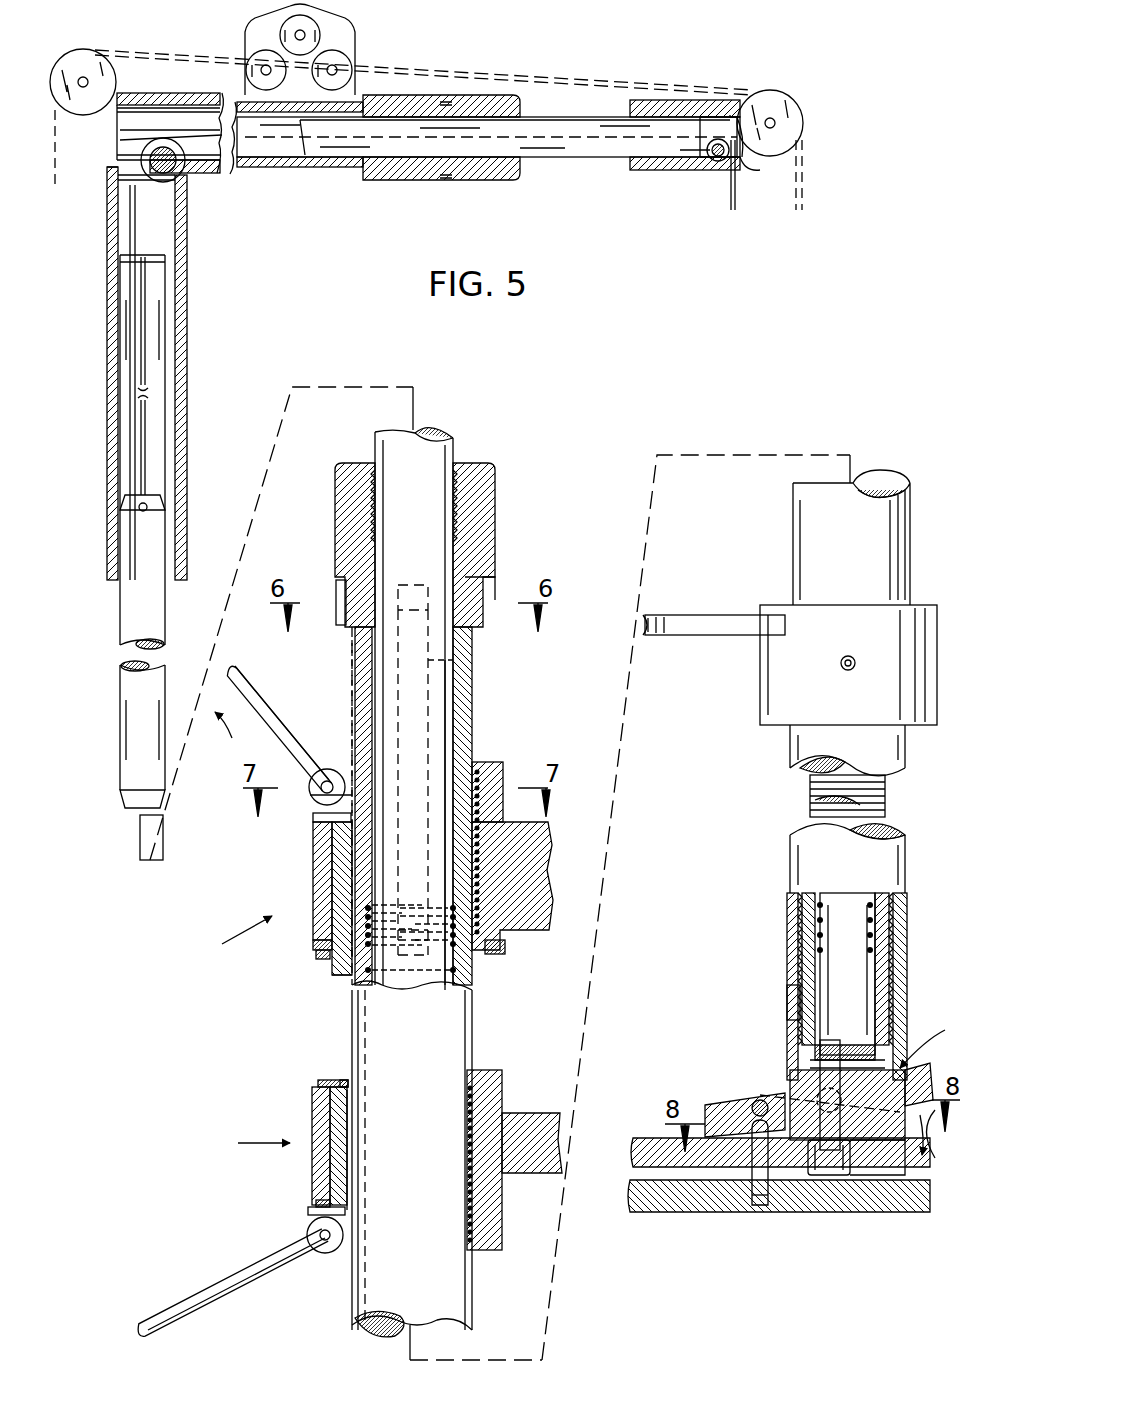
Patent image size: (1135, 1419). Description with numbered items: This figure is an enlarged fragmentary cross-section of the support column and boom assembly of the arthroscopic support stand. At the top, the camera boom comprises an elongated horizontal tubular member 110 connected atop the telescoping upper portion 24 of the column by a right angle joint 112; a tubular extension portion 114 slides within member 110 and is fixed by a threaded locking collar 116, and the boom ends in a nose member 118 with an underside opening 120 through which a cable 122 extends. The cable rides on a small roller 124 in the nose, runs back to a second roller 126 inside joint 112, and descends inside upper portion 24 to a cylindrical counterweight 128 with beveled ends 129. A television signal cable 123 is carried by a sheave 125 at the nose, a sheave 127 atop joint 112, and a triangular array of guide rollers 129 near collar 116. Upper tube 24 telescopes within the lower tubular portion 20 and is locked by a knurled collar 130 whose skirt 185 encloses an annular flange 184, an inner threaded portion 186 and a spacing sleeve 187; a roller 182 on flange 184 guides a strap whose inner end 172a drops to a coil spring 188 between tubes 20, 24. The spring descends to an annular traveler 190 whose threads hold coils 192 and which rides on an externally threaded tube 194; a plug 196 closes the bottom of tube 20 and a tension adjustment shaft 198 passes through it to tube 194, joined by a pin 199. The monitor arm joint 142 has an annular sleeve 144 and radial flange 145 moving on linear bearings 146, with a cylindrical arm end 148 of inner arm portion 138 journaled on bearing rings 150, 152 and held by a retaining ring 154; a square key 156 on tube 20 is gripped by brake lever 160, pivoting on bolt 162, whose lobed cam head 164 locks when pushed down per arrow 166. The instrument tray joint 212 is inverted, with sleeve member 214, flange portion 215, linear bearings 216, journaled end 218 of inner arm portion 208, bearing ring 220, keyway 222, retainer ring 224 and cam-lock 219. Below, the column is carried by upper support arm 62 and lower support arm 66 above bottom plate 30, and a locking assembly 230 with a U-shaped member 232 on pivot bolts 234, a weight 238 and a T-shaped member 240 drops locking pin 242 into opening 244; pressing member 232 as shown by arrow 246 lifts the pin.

The cylindrical tubular lower portion 20 is at (350, 690).
The telescoping cylindrical upper portion 24 is at (187, 290).
The bottom plate 30 is at (660, 1212).
The upper support arm 62 is at (698, 615).
The lower support arm 66 is at (635, 1138).
The elongated horizontal tubular member 110 is at (360, 95).
The right angle joint 112 is at (180, 93).
The tubular extension portion 114 is at (580, 117).
The threaded locking collar 116 is at (498, 97).
The nose member 118 is at (672, 100).
The opening 120 is at (758, 172).
The cable 122 is at (356, 150).
The television signal cable 123 is at (700, 80).
The small sheave or roller 124 is at (710, 165).
The second sheave 125 is at (780, 92).
The second small sheave or roller 126 is at (142, 138).
The second sheave 127 is at (90, 46).
The counterweight 128 is at (122, 690).
The beveled ends / guide rollers 129 is at (335, 52).
The threaded knurled locking collar 130 is at (495, 490).
The inner arm portion 138 is at (520, 932).
The joint 142 is at (231, 937).
The annular sleeve 144 is at (330, 975).
The radial flange 145 is at (313, 818).
The linear bearings 146 is at (478, 765).
The cylindrical arm end 148 is at (313, 886).
The annular support bearing ring 150 is at (313, 944).
The annular support bearing ring 152 is at (316, 955).
The annular retaining ring 154 is at (505, 950).
The square key 156 is at (350, 708).
The brake lever or cam lock 160 is at (250, 688).
The pivot bolt 162 is at (312, 783).
The lobed cam head 164 is at (340, 768).
The arrow 166 is at (226, 732).
The inner end of strap 172a is at (455, 655).
The roller 182 is at (425, 585).
The annular flange 184 is at (495, 577).
The skirt 185 is at (335, 605).
The inner threaded portion 186 is at (470, 528).
The spacing sleeve 187 is at (472, 676).
The coil spring 188 is at (360, 1000).
The annular traveler 190 is at (893, 990).
The coils 192 is at (908, 948).
The externally-threaded tubular member 194 is at (812, 795).
The plug 196 is at (890, 1178).
The rotatable tension adjustment shaft 198 is at (828, 1178).
The pin 199 is at (868, 1052).
The inner arm portion 208 is at (542, 1113).
The joint 212 is at (247, 1143).
The sleeve member 214 is at (320, 1108).
The annular flange portion 215 is at (308, 1212).
The linear bearings 216 is at (480, 1090).
The journaled proximal end 218 is at (318, 1083).
The cam-lock 219 is at (178, 1298).
The bearing ring 220 is at (316, 1200).
The keyway 222 is at (368, 1140).
The retainer ring 224 is at (340, 1078).
The locking assembly 230 is at (936, 1040).
The U-shaped member 232 is at (925, 1088).
The horizontal pivot bolts 234 is at (762, 1100).
The weight 238 is at (712, 1105).
The T-shaped member 240 is at (800, 1097).
The locking pin 242 is at (762, 1207).
The cylindrical vertical opening 244 is at (768, 1210).
The arrow 246 is at (936, 1149).